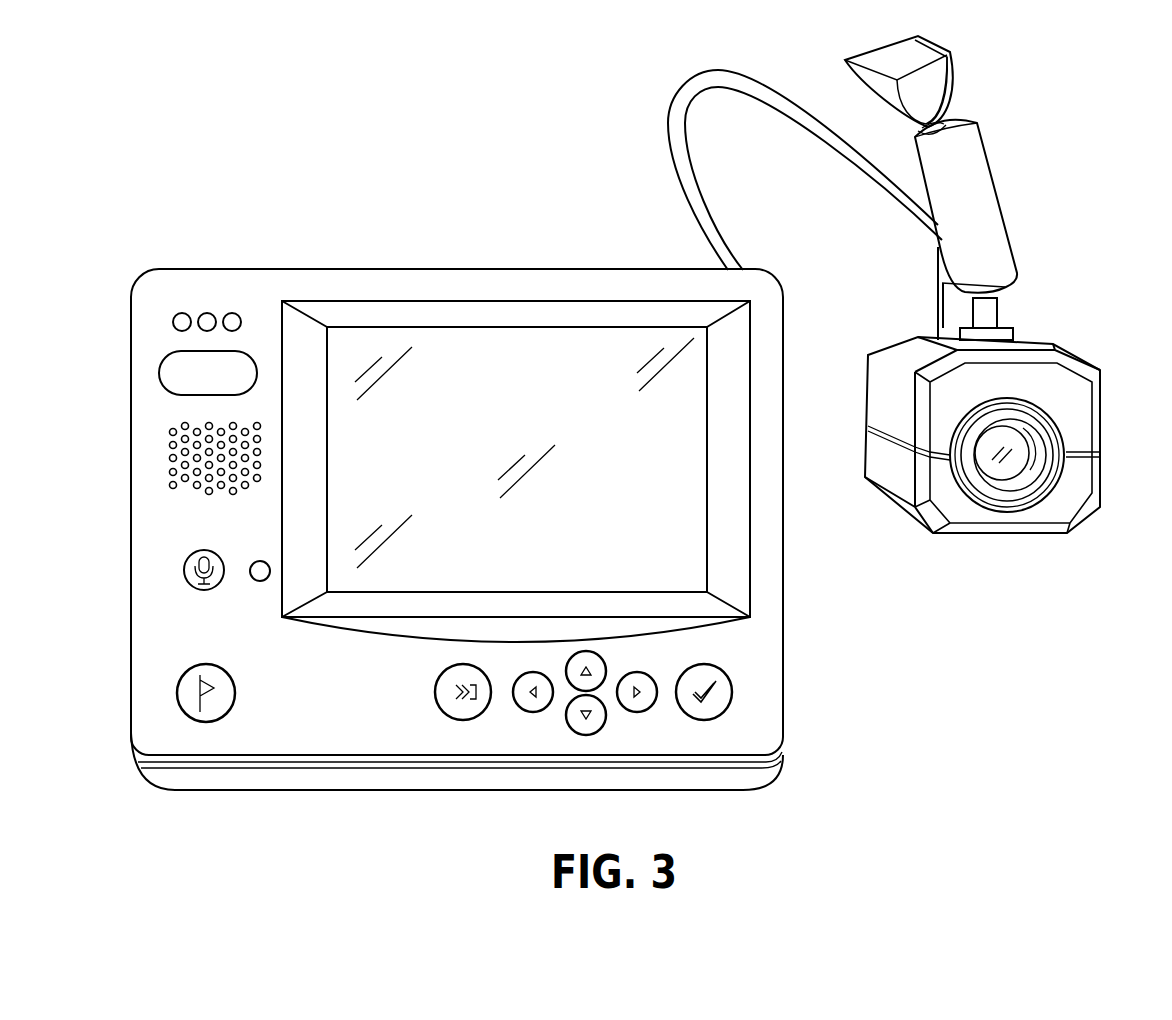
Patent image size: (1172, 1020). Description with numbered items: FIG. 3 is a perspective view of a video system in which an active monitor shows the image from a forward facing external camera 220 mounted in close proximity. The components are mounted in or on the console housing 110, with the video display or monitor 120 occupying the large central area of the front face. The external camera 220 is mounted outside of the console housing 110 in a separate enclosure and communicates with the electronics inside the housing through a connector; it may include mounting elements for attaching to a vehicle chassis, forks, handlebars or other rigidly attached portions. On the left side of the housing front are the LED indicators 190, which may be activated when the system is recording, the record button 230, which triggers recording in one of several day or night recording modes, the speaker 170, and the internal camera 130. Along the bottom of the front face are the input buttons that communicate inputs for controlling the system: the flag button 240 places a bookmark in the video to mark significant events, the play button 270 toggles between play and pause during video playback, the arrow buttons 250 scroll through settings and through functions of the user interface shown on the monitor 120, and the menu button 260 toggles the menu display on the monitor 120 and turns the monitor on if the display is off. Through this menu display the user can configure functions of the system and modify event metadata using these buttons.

The console housing 110 is at (783, 660).
The video display or monitor 120 is at (510, 355).
The internal camera 130 is at (260, 585).
The speaker 170 is at (163, 457).
The LED indicators 190 is at (207, 298).
The external camera 220 is at (1072, 262).
The record button 230 is at (180, 365).
The flag button 240 is at (170, 693).
The arrow buttons 250 is at (632, 730).
The menu button 260 is at (733, 722).
The play button 270 is at (440, 720).